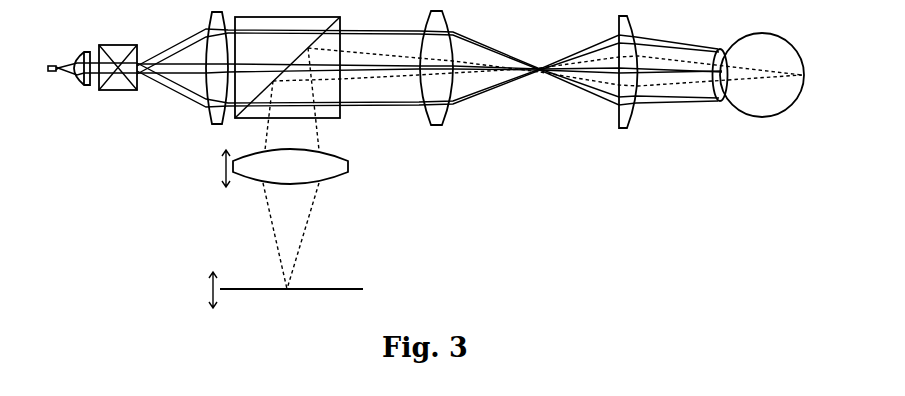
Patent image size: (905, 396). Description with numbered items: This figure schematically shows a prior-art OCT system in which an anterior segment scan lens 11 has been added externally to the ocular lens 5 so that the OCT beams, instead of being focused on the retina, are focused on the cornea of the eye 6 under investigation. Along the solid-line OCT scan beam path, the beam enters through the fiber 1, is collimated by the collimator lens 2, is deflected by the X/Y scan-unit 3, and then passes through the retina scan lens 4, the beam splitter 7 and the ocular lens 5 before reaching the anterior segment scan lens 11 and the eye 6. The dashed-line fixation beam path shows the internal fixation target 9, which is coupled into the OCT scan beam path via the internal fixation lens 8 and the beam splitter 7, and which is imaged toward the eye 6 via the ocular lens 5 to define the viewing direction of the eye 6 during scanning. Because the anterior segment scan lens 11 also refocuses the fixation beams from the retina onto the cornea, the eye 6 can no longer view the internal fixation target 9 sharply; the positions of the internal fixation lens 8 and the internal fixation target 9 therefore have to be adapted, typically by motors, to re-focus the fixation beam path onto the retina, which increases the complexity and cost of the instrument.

The fiber 1 is at (52, 77).
The collimator lens 2 is at (82, 82).
The X/Y scan-unit 3 is at (118, 78).
The retina scan lens 4 is at (217, 80).
The ocular lens 5 is at (436, 79).
The eye 6 is at (759, 90).
The beam splitter 7 is at (297, 72).
The internal fixation lens 8 is at (297, 168).
The internal fixation target 9 is at (289, 290).
The anterior segment scan lens 11 is at (627, 82).